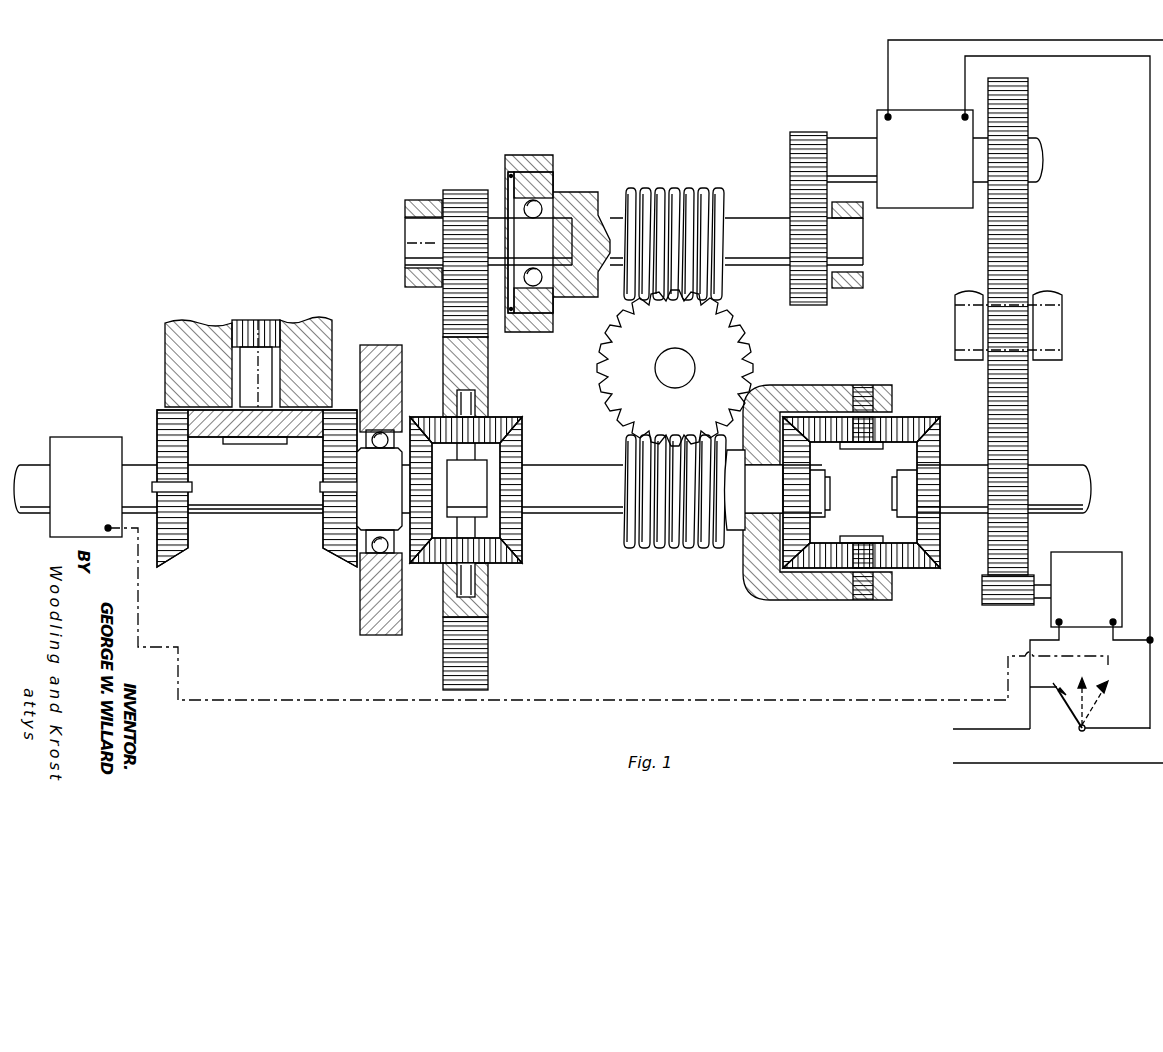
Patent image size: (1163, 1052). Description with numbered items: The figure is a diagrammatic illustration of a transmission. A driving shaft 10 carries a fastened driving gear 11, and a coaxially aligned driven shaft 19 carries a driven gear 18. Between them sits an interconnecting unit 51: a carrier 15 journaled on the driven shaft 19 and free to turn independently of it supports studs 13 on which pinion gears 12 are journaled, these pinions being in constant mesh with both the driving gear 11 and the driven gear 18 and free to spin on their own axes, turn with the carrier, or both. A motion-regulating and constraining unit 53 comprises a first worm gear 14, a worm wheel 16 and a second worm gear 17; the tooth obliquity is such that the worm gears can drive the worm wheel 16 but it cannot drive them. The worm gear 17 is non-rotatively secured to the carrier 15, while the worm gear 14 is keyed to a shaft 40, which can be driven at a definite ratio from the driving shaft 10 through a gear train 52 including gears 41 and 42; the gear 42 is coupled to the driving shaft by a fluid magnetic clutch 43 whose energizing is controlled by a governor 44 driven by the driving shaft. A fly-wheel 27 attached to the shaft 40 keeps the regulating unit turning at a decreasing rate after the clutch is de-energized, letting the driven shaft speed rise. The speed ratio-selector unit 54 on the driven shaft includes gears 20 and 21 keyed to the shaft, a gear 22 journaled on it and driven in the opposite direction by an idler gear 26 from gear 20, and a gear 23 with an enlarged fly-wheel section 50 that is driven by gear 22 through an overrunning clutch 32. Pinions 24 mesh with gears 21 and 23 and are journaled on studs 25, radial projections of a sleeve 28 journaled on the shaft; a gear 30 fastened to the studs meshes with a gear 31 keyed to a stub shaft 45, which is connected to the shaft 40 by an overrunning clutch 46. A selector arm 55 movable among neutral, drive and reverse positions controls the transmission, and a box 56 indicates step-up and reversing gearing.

The driving shaft 10 is at (1060, 471).
The driving gear 11 is at (940, 541).
The pinion gears 12 is at (918, 568).
The studs 13 is at (862, 521).
The first worm gear 14 is at (722, 286).
The carrier 15 is at (760, 592).
The worm wheel 16 is at (750, 354).
The second worm gear 17 is at (676, 548).
The driven gear 18 is at (812, 512).
The driven shaft 19 is at (574, 513).
The gear 20 is at (188, 545).
The gear 21 is at (522, 535).
The gear 22 is at (323, 548).
The gear 23 is at (445, 417).
The pinions 24 is at (508, 417).
The studs 25 is at (478, 582).
The idler gear 26 is at (292, 437).
The fly-wheel 27 is at (553, 160).
The sleeve 28 is at (448, 466).
The gear 30 is at (488, 630).
The gear 31 is at (462, 190).
The overrunning clutch 32 is at (384, 552).
The shaft 40 is at (745, 218).
The gear 41 is at (820, 305).
The gear 42 is at (800, 132).
The fluid magnetic clutch 43 is at (912, 208).
The governor 44 is at (1058, 657).
The stub shaft 45 is at (410, 235).
The overrunning clutch 46 is at (536, 200).
The enlarged section 50 is at (374, 345).
The interconnecting unit 51 is at (667, 700).
The gear train 52 is at (1030, 390).
The motion-regulating and constraining unit 53 is at (590, 358).
The speed ratio-selector unit 54 is at (530, 703).
The selector arm 55 is at (1103, 697).
The gearing box 56 is at (92, 437).